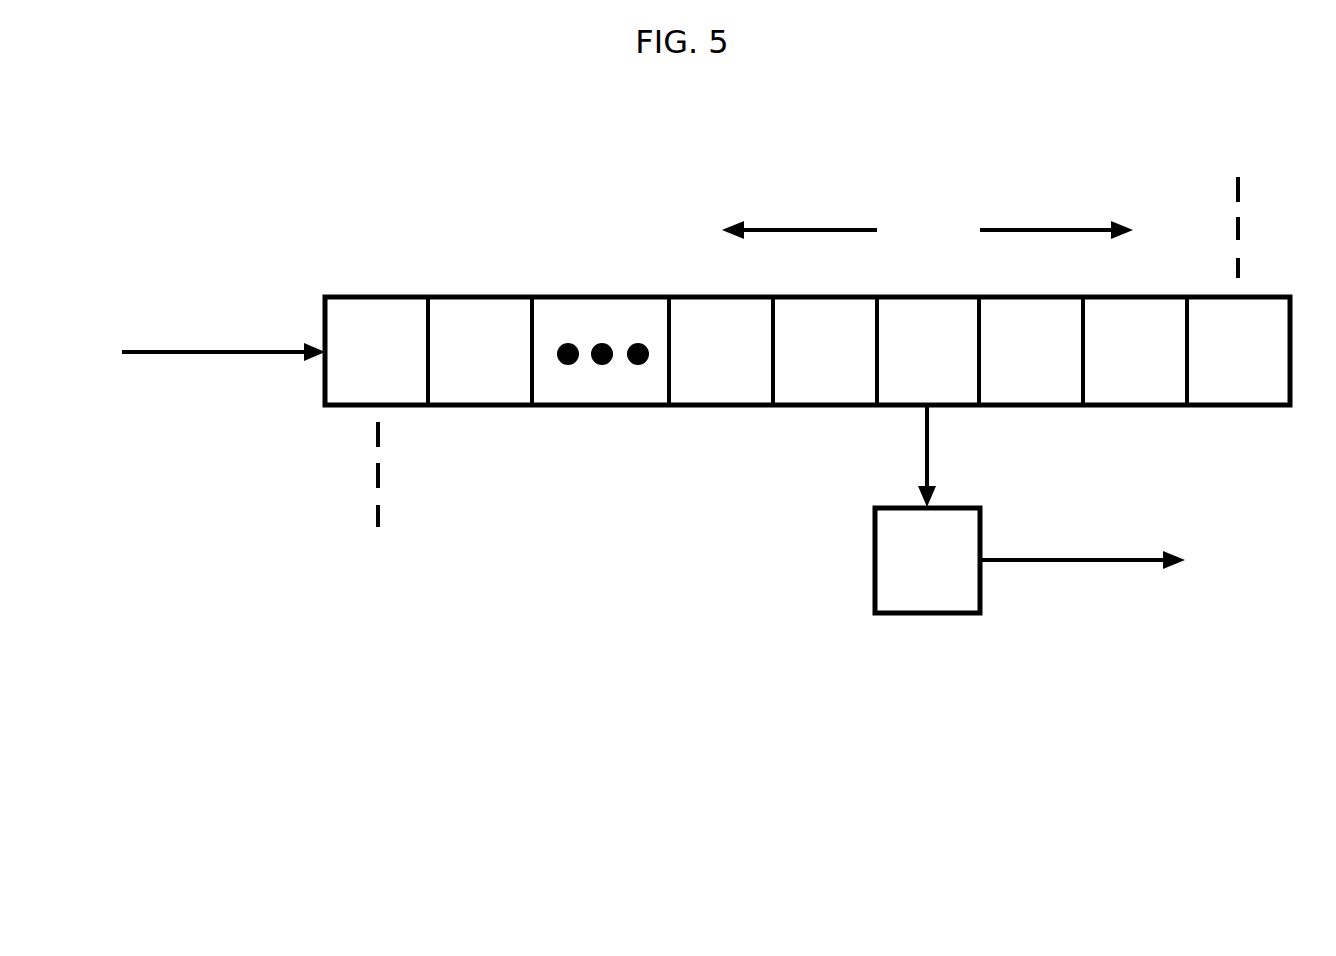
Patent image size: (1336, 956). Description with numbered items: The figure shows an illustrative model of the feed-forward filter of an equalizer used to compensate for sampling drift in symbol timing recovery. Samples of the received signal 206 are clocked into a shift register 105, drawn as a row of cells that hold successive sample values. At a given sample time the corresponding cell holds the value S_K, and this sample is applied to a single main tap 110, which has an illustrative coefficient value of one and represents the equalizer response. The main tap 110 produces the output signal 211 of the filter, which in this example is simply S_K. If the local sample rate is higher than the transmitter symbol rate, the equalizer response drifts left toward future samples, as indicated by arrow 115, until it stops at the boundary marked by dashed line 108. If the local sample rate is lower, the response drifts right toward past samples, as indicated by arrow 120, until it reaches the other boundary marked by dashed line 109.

The shift register 105 is at (342, 282).
The dashed line 108 is at (362, 510).
The dashed line 109 is at (1257, 245).
The arrow 115 is at (842, 213).
The arrow 120 is at (1013, 208).
The signal 206 is at (138, 370).
The main tap 110 is at (858, 612).
The output signal 211 is at (1118, 577).